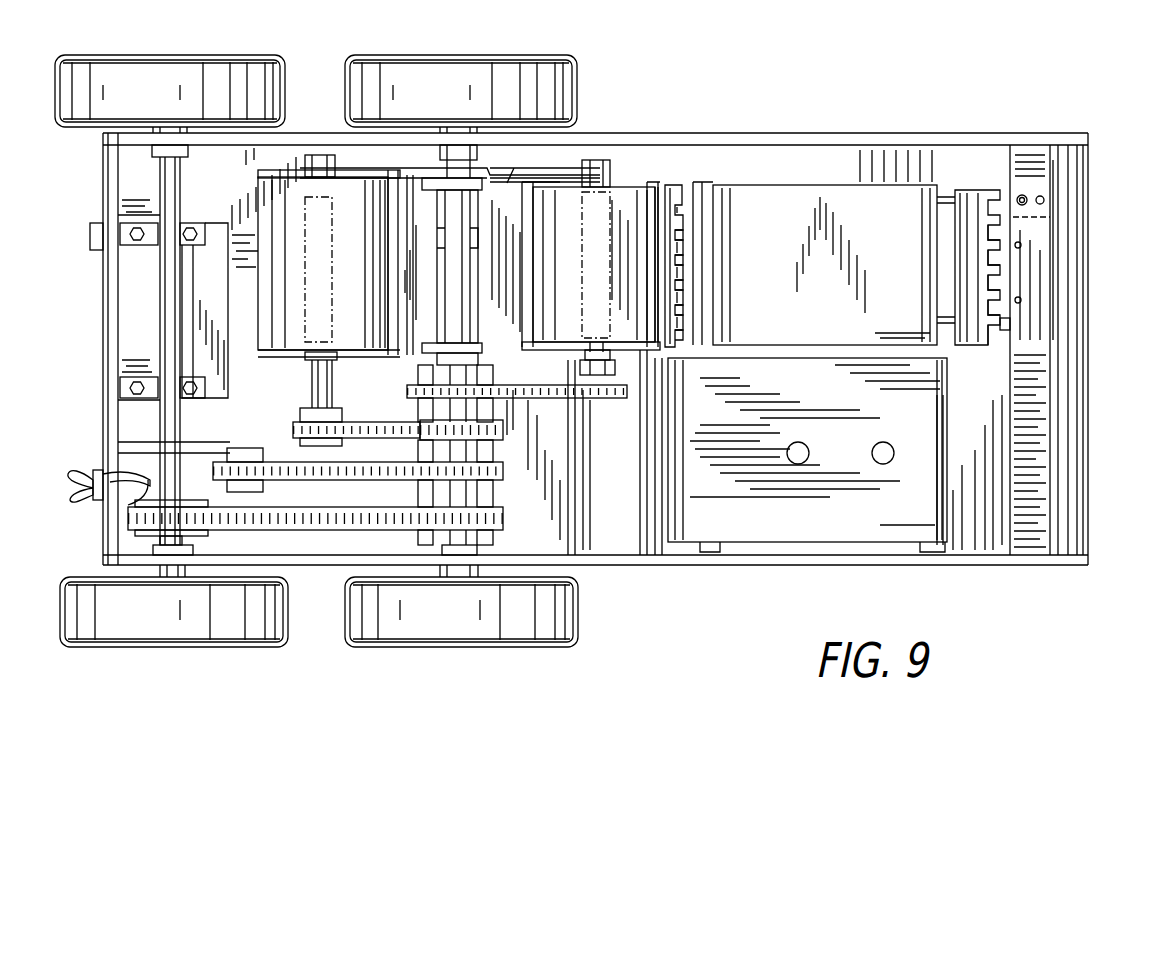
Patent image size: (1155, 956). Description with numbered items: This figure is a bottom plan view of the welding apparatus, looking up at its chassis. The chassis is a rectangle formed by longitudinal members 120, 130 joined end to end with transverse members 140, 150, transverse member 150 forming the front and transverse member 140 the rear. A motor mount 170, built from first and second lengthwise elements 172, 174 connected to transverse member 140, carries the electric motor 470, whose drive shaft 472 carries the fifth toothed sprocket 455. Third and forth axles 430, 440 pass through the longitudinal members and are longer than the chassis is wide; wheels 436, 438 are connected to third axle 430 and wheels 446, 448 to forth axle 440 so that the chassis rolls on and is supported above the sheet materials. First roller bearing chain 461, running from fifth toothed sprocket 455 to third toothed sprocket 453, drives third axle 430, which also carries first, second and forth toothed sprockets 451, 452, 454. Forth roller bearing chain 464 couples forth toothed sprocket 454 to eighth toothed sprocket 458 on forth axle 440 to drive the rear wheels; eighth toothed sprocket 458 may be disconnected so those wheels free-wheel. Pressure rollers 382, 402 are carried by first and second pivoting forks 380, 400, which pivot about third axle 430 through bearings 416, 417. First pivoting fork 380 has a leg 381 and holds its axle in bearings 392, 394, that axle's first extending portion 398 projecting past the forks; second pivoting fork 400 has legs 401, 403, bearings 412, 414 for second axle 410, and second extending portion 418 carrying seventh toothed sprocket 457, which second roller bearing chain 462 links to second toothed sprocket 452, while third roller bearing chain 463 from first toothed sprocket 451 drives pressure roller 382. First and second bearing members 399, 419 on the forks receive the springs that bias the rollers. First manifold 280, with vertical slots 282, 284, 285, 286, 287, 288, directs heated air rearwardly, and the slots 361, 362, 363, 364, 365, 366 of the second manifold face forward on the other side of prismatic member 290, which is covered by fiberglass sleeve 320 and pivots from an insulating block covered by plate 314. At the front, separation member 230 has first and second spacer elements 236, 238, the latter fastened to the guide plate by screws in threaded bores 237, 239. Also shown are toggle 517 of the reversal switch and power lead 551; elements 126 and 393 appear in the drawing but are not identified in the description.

The longitudinal member 120 is at (692, 132).
The longitudinal member 130 is at (672, 568).
The transverse member 140 is at (112, 265).
The transverse member 150 is at (1060, 508).
The wheel 446 is at (148, 68).
The wheel 436 is at (538, 68).
The wheel 448 is at (193, 628).
The wheel 438 is at (460, 628).
The motor mount 170 is at (188, 215).
The forth axle 440 is at (165, 298).
The second lengthwise element 174 is at (128, 230).
The first lengthwise element 172 is at (198, 402).
The mounting plate 126 is at (208, 258).
The electrical motor 470 is at (128, 352).
The drive shaft 472 is at (228, 446).
The power lead 551 is at (68, 473).
The toggle 517 is at (75, 494).
The bearing 414 is at (320, 152).
The second pivoting fork 400 is at (352, 158).
The leg 403 is at (380, 163).
The pressure roller 402 is at (293, 197).
The second axle 410 is at (300, 305).
The leg 401 is at (388, 358).
The second bearing member 419 is at (412, 193).
The bearing 412 is at (308, 372).
The second extending portion 418 is at (318, 397).
The bearing 417 is at (456, 150).
The third axle 430 is at (462, 192).
The bearing 416 is at (462, 368).
The first bearing member 399 is at (505, 182).
The bracket 393 is at (535, 182).
The bearing 394 is at (600, 165).
The first pivoting fork 380 is at (540, 175).
The pressure roller 382 is at (622, 205).
The bearing 392 is at (610, 262).
The leg 381 is at (548, 350).
The first extending portion 398 is at (612, 372).
The vertical slot 288 is at (664, 190).
The vertical slot 287 is at (680, 233).
The vertical slot 286 is at (682, 257).
The vertical slot 285 is at (682, 283).
The vertical slot 284 is at (682, 306).
The vertical slot 282 is at (682, 323).
The first manifold 280 is at (703, 185).
The prismatic member 290 is at (823, 185).
The fiberglass sleeve 320 is at (868, 200).
The slot 366 is at (986, 192).
The slot 365 is at (990, 230).
The slot 364 is at (992, 257).
The slot 363 is at (992, 282).
The slot 362 is at (995, 308).
The slot 361 is at (992, 325).
The separation member 230 is at (1048, 285).
The second spacer element 238 is at (1023, 196).
The threaded bore 237 is at (1027, 200).
The threaded bore 239 is at (1043, 200).
The first spacer element 236 is at (1043, 338).
The plate 314 is at (802, 545).
The third roller bearing chain 463 is at (537, 398).
The first toothed sprocket 451 is at (467, 393).
The second roller bearing chain 462 is at (367, 430).
The second toothed sprocket 452 is at (463, 432).
The seventh toothed sprocket 457 is at (325, 435).
The first roller bearing chain 461 is at (362, 478).
The fifth toothed sprocket 455 is at (250, 480).
The third toothed sprocket 453 is at (493, 482).
The forth roller bearing chain 464 is at (330, 535).
The eighth toothed sprocket 458 is at (133, 520).
The forth toothed sprocket 454 is at (488, 532).